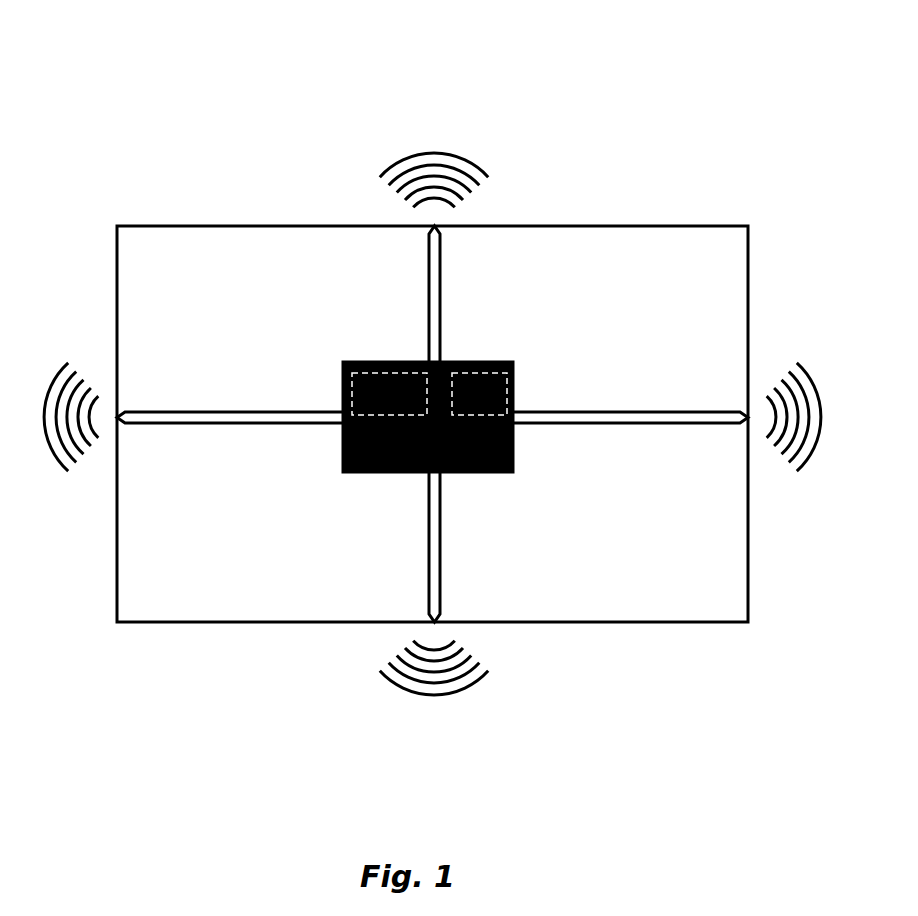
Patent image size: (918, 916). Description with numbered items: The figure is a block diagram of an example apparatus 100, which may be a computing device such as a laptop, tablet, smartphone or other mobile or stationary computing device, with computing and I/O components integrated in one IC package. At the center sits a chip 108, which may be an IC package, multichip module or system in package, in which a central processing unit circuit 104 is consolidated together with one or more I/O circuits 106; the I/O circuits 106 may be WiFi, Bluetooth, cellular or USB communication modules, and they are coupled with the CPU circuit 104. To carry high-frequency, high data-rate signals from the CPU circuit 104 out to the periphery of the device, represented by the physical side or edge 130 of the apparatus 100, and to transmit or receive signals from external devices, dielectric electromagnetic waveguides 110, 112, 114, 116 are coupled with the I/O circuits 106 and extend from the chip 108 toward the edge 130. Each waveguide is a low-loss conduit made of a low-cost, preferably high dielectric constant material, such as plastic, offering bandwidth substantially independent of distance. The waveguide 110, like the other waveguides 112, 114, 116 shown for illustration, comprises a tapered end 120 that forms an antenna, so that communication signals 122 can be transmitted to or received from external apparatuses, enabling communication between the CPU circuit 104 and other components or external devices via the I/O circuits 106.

The apparatus 100 is at (582, 68).
The central processing unit (CPU) circuit 104 is at (358, 362).
The I/O circuits 106 is at (495, 365).
The chip 108 is at (409, 439).
The dielectric electromagnetic waveguide 110 is at (432, 457).
The dielectric electromagnetic waveguide 112 is at (478, 530).
The dielectric electromagnetic waveguide 114 is at (165, 411).
The dielectric electromagnetic waveguide 116 is at (427, 277).
The tapered end 120 is at (740, 410).
The communication signals 122 is at (808, 372).
The physical side or edge 130 is at (749, 586).